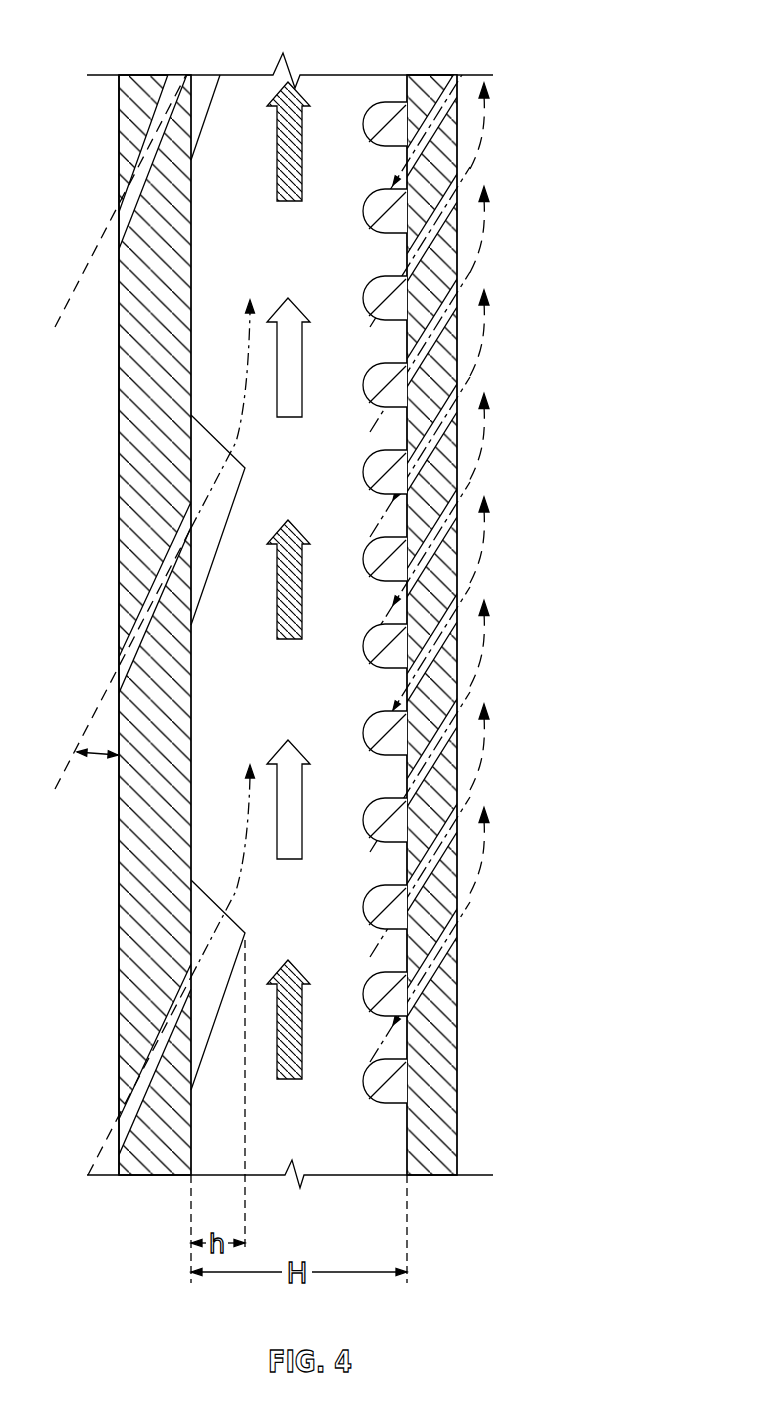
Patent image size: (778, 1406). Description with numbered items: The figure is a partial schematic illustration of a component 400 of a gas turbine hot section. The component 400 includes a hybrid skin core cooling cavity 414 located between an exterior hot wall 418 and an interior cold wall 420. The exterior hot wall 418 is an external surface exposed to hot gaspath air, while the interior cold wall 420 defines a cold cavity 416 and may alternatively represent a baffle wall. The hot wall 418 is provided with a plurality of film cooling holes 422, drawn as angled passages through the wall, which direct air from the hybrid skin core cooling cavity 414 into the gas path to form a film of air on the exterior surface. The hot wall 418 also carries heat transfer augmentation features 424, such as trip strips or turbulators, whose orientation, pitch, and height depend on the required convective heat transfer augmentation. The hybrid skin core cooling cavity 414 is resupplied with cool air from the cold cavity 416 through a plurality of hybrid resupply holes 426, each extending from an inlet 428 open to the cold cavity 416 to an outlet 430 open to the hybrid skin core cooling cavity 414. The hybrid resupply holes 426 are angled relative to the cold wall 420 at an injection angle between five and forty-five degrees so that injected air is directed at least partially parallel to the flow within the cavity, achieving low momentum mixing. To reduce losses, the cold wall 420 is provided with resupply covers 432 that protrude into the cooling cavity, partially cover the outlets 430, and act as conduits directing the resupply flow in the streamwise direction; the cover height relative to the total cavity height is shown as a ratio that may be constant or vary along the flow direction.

The component 400 is at (587, 52).
The hybrid skin core cooling cavity 414 is at (264, 704).
The cold cavity 416 is at (80, 874).
The exterior hot wall 418 is at (431, 1167).
The interior cold wall 420 is at (158, 1163).
The film cooling holes 422 is at (463, 389).
The heat transfer augmentation features 424 is at (378, 112).
The hybrid resupply holes 426 is at (148, 131).
The inlet 428 is at (119, 210).
The outlet 430 is at (200, 498).
The resupply covers 432 is at (228, 505).